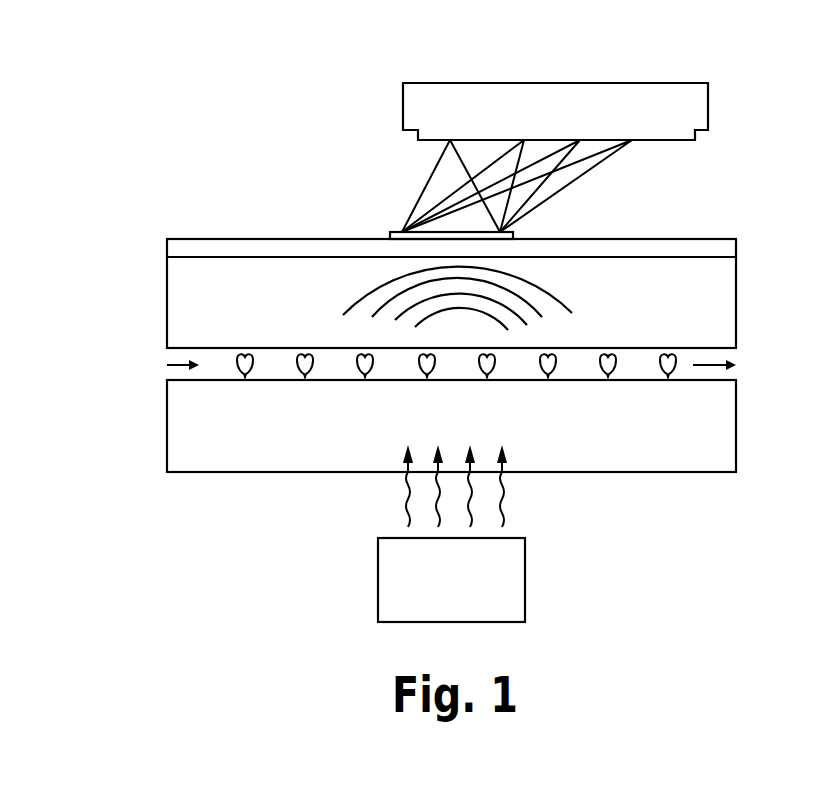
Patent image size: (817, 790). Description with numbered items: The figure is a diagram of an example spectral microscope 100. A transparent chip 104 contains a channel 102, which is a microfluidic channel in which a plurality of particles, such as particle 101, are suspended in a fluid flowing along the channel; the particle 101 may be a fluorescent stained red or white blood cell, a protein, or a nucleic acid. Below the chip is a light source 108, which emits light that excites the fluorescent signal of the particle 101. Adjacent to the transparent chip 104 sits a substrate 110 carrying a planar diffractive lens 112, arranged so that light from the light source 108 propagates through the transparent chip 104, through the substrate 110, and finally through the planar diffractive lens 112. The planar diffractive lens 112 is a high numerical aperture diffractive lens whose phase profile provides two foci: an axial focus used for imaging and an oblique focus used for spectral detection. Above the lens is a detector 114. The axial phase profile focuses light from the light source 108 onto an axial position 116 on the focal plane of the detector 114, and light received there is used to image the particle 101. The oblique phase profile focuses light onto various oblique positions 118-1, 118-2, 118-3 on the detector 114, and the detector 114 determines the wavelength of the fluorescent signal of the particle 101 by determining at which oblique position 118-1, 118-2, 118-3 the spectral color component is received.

The spectral microscope 100 is at (178, 80).
The particle 101 is at (604, 378).
The channel 102 is at (757, 348).
The transparent chip 104 is at (167, 305).
The light source 108 is at (378, 577).
The substrate 110 is at (167, 243).
The planar diffractive lens 112 is at (400, 232).
The detector 114 is at (403, 104).
The axial position 116 is at (450, 140).
The oblique position 118-1 is at (524, 140).
The oblique position 118-2 is at (580, 140).
The oblique position 118-3 is at (632, 140).